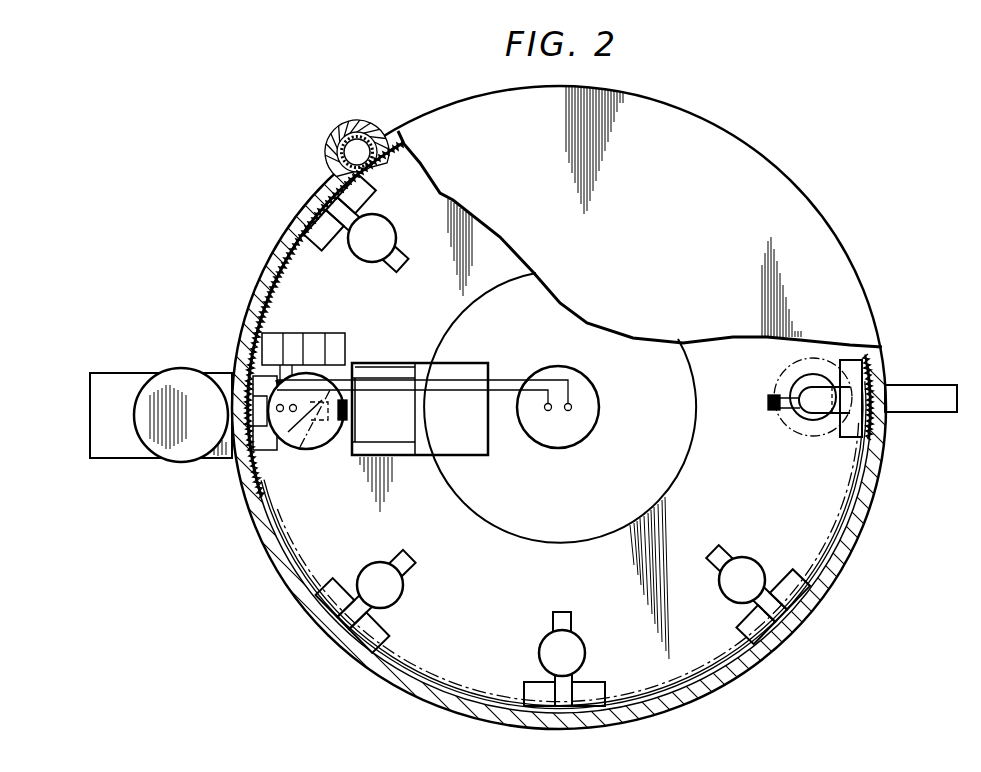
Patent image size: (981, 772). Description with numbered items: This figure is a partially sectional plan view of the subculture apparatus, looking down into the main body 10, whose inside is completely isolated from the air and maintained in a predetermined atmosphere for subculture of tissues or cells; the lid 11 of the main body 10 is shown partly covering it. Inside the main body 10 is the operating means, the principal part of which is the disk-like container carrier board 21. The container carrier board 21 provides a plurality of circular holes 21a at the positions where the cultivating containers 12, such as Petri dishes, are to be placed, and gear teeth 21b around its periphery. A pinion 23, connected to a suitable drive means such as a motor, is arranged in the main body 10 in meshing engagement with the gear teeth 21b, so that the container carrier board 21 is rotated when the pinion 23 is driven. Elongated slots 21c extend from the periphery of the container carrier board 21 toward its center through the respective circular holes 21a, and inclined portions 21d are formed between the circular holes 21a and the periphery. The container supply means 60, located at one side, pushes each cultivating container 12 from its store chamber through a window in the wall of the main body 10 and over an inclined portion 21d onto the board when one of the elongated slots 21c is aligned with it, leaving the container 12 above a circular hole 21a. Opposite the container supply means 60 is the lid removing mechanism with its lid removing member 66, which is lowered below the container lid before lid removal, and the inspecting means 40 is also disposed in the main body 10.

The main body 10 is at (247, 483).
The lid 11 is at (742, 333).
The cultivating container 12 is at (328, 444).
The container carrier board 21 is at (258, 522).
The circular holes 21a is at (377, 567).
The gear teeth 21b is at (268, 276).
The elongated slots 21c is at (408, 568).
The inclined portions 21d is at (383, 635).
The pinion 23 is at (360, 140).
The inspecting means 40 is at (901, 380).
The container supply means 60 is at (190, 366).
The lid removing member 66 is at (463, 455).